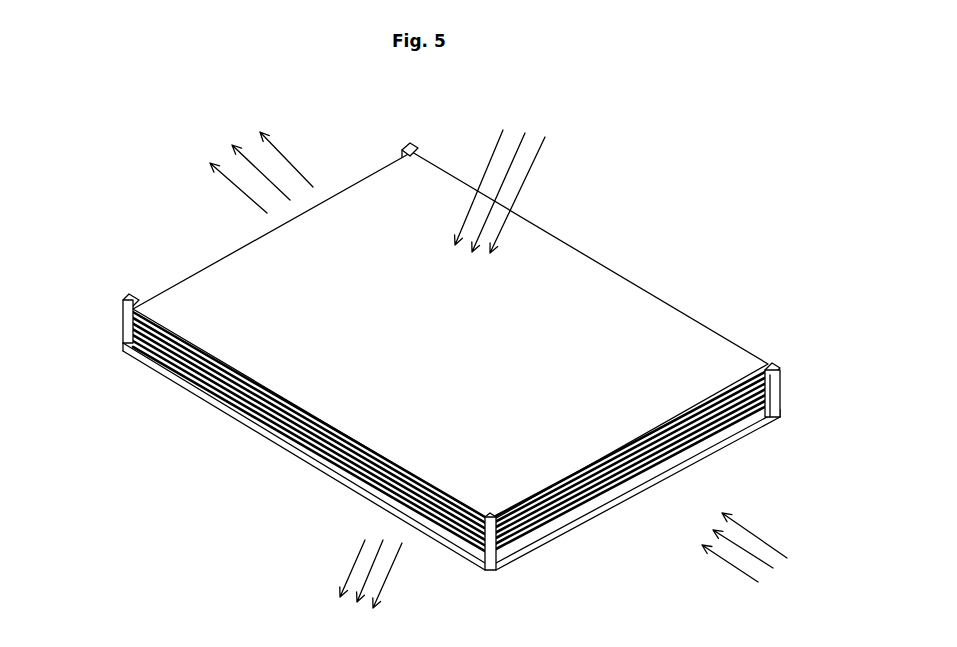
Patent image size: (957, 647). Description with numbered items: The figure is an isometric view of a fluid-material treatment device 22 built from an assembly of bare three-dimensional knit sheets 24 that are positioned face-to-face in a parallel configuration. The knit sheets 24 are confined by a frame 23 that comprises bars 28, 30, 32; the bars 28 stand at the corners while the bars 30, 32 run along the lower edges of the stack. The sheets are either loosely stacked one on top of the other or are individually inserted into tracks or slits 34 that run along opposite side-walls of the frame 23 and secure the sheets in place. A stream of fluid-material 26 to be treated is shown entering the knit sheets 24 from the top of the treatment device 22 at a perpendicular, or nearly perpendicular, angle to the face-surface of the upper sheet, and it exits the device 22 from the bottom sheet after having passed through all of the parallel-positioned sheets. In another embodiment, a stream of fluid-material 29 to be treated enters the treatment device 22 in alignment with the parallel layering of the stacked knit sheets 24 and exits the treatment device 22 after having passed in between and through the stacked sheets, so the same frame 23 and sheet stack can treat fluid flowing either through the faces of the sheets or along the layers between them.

The fluid-material treatment device 22 is at (609, 209).
The frame 23 is at (272, 463).
The 3D knit sheets 24 is at (262, 413).
The stream of fluid-material 26 is at (540, 152).
The bars 28 is at (127, 323).
The stream of fluid-material 29 is at (300, 170).
The bars 30 is at (188, 388).
The bars 32 is at (703, 455).
The tracks or slits 34 is at (128, 343).